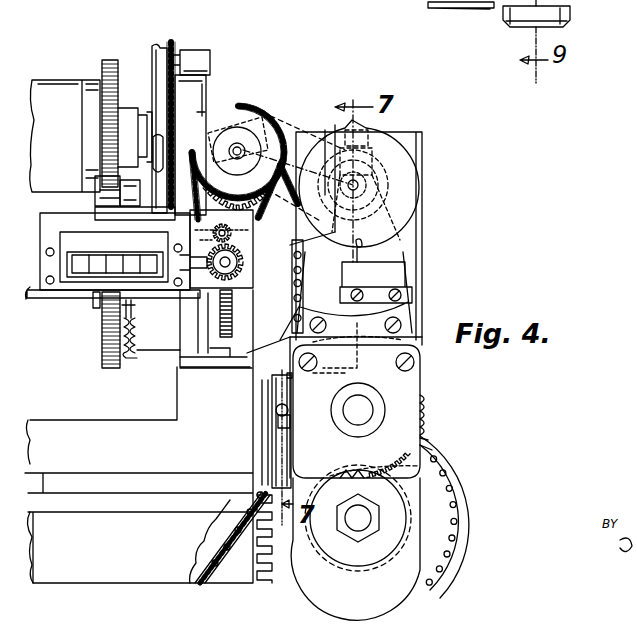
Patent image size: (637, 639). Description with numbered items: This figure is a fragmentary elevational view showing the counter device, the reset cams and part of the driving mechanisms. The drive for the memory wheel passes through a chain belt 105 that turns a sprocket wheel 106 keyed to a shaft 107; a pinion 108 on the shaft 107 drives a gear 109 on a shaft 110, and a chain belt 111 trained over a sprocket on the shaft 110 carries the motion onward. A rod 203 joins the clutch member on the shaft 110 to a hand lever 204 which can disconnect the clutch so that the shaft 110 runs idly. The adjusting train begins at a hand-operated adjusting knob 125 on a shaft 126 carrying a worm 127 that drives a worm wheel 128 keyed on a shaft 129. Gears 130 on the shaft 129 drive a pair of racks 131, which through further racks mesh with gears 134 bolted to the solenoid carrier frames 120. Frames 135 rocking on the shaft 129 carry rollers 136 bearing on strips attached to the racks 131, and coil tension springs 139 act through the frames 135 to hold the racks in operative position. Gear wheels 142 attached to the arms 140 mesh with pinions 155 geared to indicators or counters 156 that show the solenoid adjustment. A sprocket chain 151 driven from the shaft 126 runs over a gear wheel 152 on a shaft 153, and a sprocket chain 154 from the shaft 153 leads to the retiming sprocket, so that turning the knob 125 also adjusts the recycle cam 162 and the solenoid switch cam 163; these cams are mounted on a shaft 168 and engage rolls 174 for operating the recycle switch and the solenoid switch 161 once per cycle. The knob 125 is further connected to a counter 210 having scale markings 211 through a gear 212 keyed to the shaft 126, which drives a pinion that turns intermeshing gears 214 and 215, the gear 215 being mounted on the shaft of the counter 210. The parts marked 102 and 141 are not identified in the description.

The frame column 102 is at (188, 97).
The chain belt 105 is at (452, 502).
The sprocket wheel 106 is at (280, 563).
The shaft 107 is at (358, 518).
The pinion 108 is at (420, 477).
The gear 109 is at (430, 406).
The shaft 110 is at (362, 406).
The chain belt 111 is at (298, 306).
The solenoid carrier frame 120 is at (65, 136).
The hand-operated adjusting knob 125 is at (566, 13).
The shaft 126 is at (209, 232).
The worm 127 is at (247, 237).
The worm wheel 128 is at (232, 325).
The shaft 129 is at (36, 299).
The gears 130 is at (104, 340).
The racks 131 is at (110, 208).
The gears 134 is at (102, 61).
The frames 135 is at (132, 315).
The rollers 136 is at (98, 190).
The coil tension springs 139 is at (140, 335).
The arms 140 is at (158, 58).
The base plate 141 is at (158, 186).
The gear wheels 142 is at (204, 86).
The sprocket chain 151 is at (271, 113).
The gear wheel 152 is at (242, 126).
The shaft 153 is at (242, 150).
The sprocket chain 154 is at (253, 222).
The pinions 155 is at (172, 45).
The indicators or counters 156 is at (203, 50).
The solenoid switch 161 is at (385, 278).
The recycle cam 162 is at (317, 218).
The solenoid switch cam 163 is at (390, 128).
The shaft 168 is at (358, 185).
The rolls 174 is at (356, 248).
The rod 203 is at (276, 409).
The hand lever 204 is at (290, 441).
The counter 210 is at (90, 283).
The scale markings 211 is at (143, 252).
The gear 212 is at (236, 192).
The gear 214 is at (233, 277).
The gear 215 is at (204, 232).